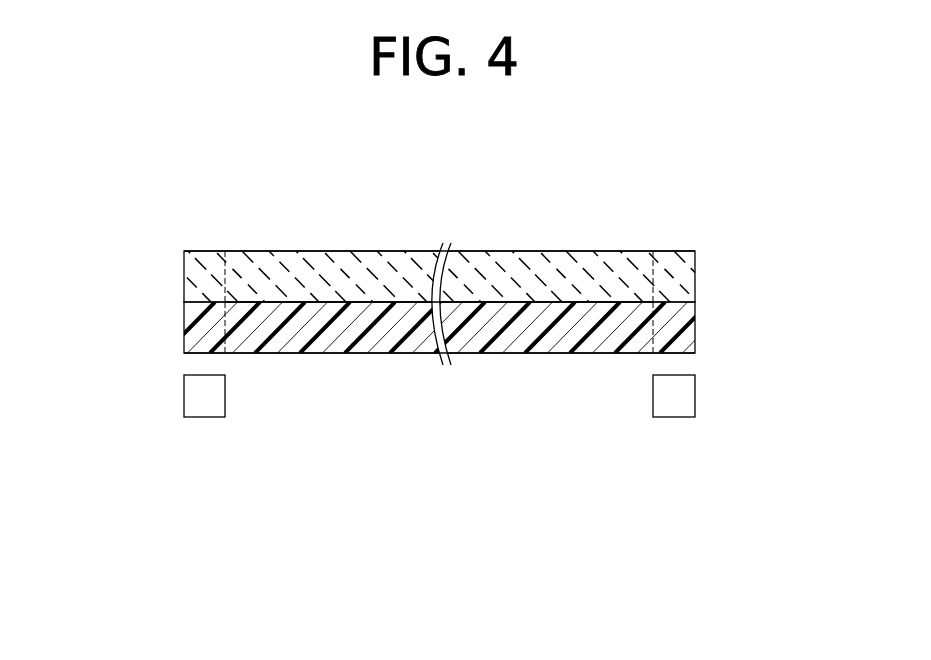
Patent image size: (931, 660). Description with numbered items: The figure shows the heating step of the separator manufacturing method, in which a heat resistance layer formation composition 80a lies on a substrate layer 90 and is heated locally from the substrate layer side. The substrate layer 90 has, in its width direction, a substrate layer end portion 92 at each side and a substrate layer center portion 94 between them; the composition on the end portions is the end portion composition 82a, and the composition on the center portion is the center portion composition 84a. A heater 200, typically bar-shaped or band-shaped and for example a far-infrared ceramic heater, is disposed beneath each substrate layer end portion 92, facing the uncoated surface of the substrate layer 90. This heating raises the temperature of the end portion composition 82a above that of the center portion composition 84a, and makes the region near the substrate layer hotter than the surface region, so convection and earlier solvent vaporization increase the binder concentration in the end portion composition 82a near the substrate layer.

The heat resistance layer formation composition 80a is at (697, 283).
The end portion composition 82a is at (184, 262).
The center portion composition 84a is at (314, 250).
The substrate layer 90 is at (697, 335).
The substrate layer end portion 92 is at (190, 340).
The substrate layer center portion 94 is at (380, 355).
The heater 200 is at (218, 400).